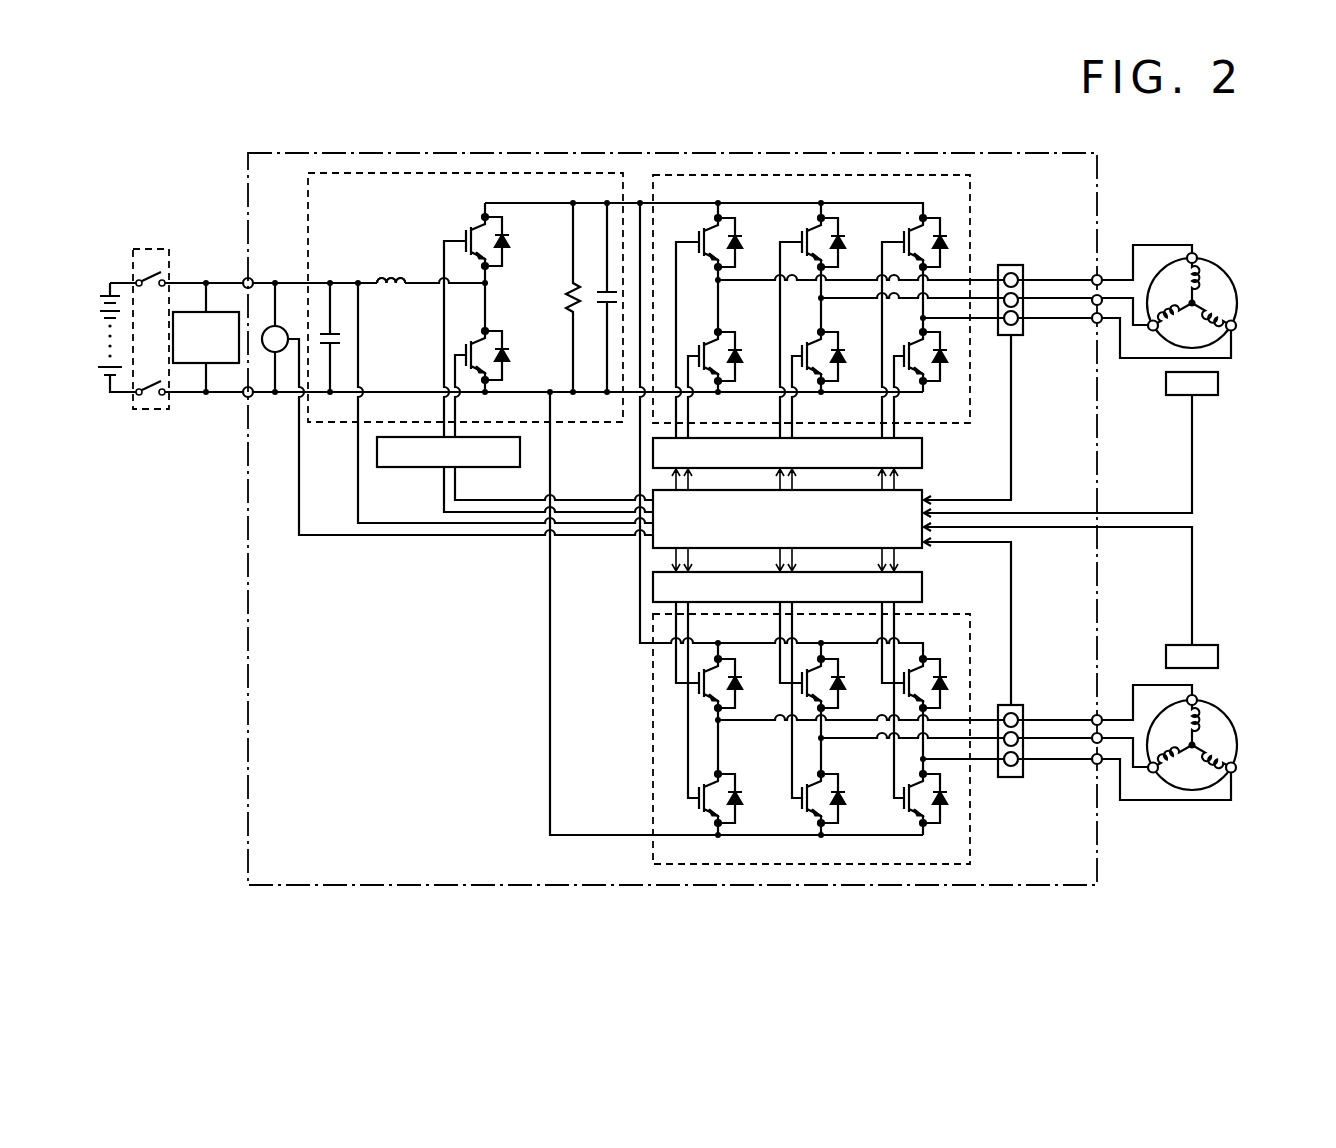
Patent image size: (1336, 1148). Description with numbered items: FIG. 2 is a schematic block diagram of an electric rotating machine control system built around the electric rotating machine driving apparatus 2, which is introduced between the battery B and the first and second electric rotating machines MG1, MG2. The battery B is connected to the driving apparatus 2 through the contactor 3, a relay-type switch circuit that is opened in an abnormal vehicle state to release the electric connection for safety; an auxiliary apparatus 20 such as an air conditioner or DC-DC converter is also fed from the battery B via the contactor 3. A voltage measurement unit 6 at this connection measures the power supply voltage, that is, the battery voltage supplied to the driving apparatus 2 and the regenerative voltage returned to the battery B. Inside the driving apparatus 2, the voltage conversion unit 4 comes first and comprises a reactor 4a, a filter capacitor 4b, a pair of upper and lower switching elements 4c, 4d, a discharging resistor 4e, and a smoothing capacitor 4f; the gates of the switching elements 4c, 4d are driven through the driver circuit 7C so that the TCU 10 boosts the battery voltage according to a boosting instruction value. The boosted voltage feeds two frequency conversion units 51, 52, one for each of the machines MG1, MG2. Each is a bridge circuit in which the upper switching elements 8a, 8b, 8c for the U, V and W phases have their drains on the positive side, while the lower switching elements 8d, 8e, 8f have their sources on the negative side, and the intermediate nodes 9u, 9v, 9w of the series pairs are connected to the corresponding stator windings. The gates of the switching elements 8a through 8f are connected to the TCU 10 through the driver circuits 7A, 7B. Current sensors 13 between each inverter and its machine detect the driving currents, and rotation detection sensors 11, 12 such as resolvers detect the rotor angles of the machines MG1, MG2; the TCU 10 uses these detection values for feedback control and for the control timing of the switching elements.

The battery B is at (111, 271).
The contactor 3 is at (150, 249).
The auxiliary apparatus 20 is at (216, 311).
The voltage measurement unit 6 is at (284, 327).
The voltage conversion unit 4 is at (325, 423).
The reactor 4a is at (378, 280).
The filter capacitor 4b is at (337, 340).
The upper switching element 4c is at (456, 219).
The lower switching element 4d is at (456, 338).
The discharging resistor 4e is at (572, 283).
The smoothing capacitor 4f is at (603, 303).
The driver circuit 7C is at (404, 467).
The driver circuit 7A is at (924, 462).
The driver circuit 7B is at (924, 578).
The TCU 10 is at (650, 549).
The upper switching element for the U phase 8a is at (703, 214).
The upper switching element for the V phase 8b is at (806, 214).
The upper switching element for the W phase 8c is at (906, 214).
The lower switching element for the U phase 8d is at (710, 385).
The lower switching element for the V phase 8e is at (813, 385).
The lower switching element for the W phase 8f is at (915, 385).
The intermediate node 9u is at (718, 283).
The intermediate node 9v is at (821, 301).
The intermediate node 9w is at (918, 318).
The frequency conversion unit 51 is at (972, 230).
The frequency conversion unit 52 is at (972, 800).
The current sensor 13 is at (1024, 266).
The rotation detection sensor 11 is at (1205, 400).
The rotation detection sensor 12 is at (1207, 645).
The first electric rotating machine MG1 is at (1228, 292).
The second electric rotating machine MG2 is at (1235, 716).
The electric rotating machine driving apparatus 2 is at (247, 658).